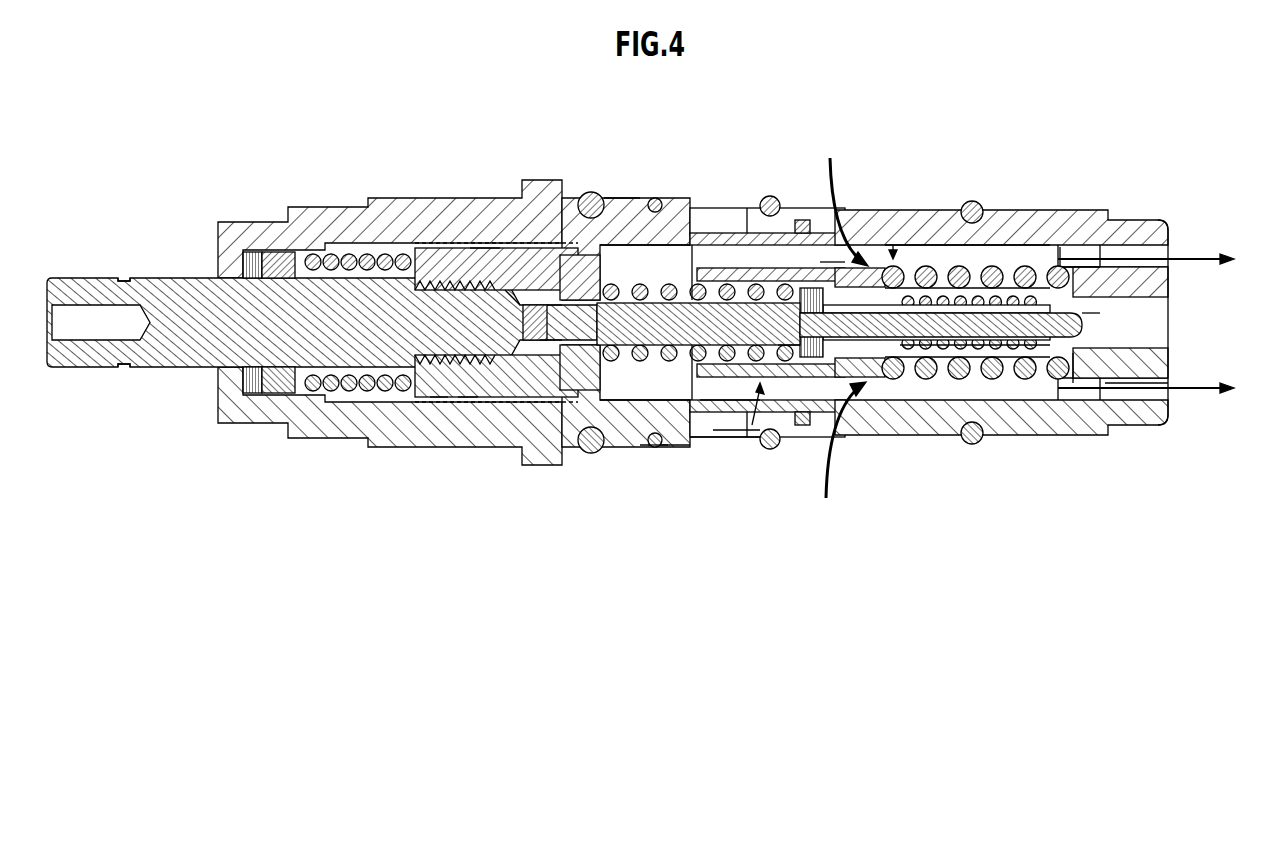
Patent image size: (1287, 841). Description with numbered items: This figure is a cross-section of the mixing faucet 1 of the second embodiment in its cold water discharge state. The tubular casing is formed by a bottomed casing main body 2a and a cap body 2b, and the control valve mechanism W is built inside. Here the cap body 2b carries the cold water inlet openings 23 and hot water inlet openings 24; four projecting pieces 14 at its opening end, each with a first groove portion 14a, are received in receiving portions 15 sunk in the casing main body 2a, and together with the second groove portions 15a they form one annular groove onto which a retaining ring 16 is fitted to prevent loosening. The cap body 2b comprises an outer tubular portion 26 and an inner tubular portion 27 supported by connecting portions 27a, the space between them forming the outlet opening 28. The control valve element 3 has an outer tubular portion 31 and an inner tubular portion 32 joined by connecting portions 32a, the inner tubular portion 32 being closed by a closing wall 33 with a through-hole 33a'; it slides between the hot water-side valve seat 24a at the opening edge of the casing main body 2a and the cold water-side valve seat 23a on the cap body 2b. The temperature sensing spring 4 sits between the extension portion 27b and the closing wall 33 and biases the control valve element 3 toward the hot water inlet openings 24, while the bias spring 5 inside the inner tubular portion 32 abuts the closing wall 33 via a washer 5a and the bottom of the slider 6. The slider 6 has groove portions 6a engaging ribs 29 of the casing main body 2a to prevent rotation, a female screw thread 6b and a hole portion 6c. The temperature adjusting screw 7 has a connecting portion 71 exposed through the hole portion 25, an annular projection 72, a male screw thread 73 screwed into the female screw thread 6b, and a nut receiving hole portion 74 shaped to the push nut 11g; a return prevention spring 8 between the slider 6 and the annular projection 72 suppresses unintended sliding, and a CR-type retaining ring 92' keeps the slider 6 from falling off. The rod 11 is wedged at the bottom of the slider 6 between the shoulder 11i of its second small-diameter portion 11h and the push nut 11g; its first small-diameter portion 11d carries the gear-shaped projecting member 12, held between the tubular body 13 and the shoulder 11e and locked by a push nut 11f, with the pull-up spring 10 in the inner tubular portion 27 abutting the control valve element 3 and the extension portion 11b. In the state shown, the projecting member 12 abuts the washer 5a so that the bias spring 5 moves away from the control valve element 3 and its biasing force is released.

The mixing faucet 1 is at (192, 138).
The casing main body 2a is at (520, 455).
The cap body 2b is at (1040, 437).
The control valve element 3 is at (732, 437).
The temperature sensing spring 4 is at (995, 385).
The bias spring 5 is at (617, 392).
The washer 5a is at (894, 232).
The slider 6 is at (572, 400).
The groove portions 6a is at (438, 400).
The female screw thread 6b is at (466, 400).
The hole portion 6c is at (596, 392).
The temperature adjusting screw 7 is at (292, 395).
The return prevention spring 8 is at (347, 395).
The pull-up spring 10 is at (966, 444).
The rod 11 is at (1085, 325).
The extension portion 11b is at (1085, 250).
The first small-diameter portion 11d is at (915, 360).
The shoulder 11e is at (785, 440).
The push nut 11f is at (1095, 300).
The push nut 11g is at (545, 395).
The second small-diameter portion 11h is at (515, 290).
The shoulder 11i is at (550, 300).
The projecting member 12 is at (862, 378).
The tubular body 13 is at (1005, 302).
The projecting pieces 14 is at (600, 200).
The first groove portions 14a is at (668, 200).
The receiving portions 15 is at (700, 200).
The second groove portions 15a is at (650, 450).
The retaining ring 16 is at (655, 198).
The cold water inlet openings 23 is at (843, 210).
The cold water-side valve seat 23a is at (825, 258).
The hot water inlet openings 24 is at (712, 215).
The hot water-side valve seat 24a is at (728, 440).
The hole portion 25 is at (232, 352).
The outer tubular portion 26 is at (1148, 430).
The inner tubular portion 27 is at (1152, 352).
The connecting portions 27a is at (1105, 396).
The extension portion 27b is at (1076, 400).
The outlet opening 28 is at (1088, 252).
The ribs 29 is at (635, 240).
The outer tubular portion 31 is at (740, 447).
The inner tubular portion 32 is at (764, 198).
The connecting portions 32a is at (798, 220).
The closing wall 33 is at (811, 358).
The through-hole 33a' is at (936, 250).
The connecting portion 71 is at (95, 278).
The annular projection 72 is at (256, 393).
The male screw thread 73 is at (485, 268).
The nut receiving hole portion 74 is at (535, 305).
The CR-type retaining ring 92' is at (665, 469).
The control valve mechanism W is at (880, 300).